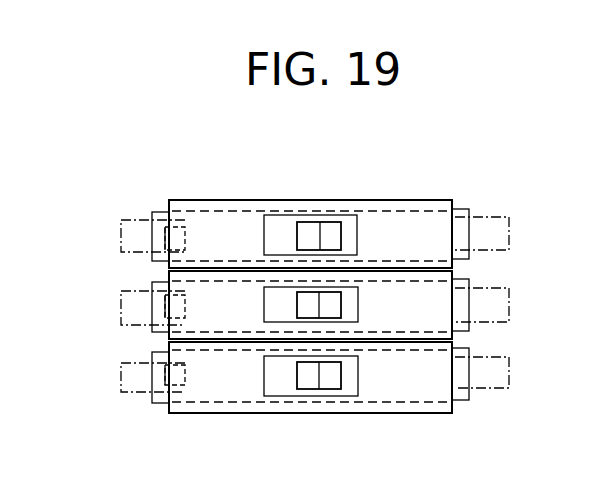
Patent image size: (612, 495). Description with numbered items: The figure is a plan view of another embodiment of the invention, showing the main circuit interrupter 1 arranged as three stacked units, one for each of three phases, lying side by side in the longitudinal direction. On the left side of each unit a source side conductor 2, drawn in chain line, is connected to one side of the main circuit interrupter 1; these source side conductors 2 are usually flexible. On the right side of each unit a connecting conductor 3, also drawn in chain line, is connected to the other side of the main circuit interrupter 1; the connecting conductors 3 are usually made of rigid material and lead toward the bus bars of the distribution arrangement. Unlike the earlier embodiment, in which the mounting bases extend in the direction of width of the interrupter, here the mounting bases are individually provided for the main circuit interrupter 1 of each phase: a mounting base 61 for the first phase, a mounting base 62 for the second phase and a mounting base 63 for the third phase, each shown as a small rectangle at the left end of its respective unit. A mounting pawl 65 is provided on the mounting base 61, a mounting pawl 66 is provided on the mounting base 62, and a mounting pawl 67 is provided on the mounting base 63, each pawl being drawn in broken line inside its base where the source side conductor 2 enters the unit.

The main circuit interrupter 1 is at (222, 200).
The source side conductor 2 is at (132, 218).
The connecting conductor 3 is at (486, 217).
The mounting base 61 is at (155, 212).
The mounting base 62 is at (152, 281).
The mounting base 63 is at (154, 352).
The mounting pawl 65 is at (165, 243).
The mounting pawl 66 is at (166, 315).
The mounting pawl 67 is at (167, 373).